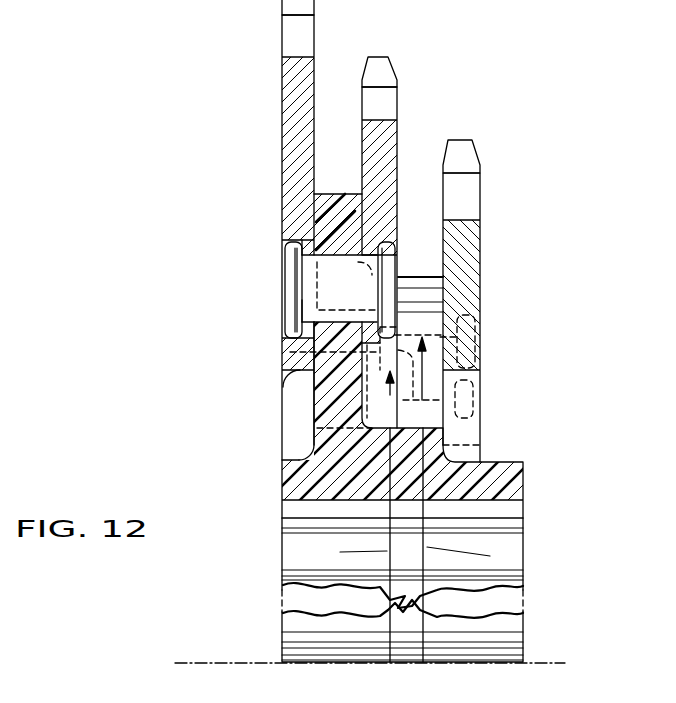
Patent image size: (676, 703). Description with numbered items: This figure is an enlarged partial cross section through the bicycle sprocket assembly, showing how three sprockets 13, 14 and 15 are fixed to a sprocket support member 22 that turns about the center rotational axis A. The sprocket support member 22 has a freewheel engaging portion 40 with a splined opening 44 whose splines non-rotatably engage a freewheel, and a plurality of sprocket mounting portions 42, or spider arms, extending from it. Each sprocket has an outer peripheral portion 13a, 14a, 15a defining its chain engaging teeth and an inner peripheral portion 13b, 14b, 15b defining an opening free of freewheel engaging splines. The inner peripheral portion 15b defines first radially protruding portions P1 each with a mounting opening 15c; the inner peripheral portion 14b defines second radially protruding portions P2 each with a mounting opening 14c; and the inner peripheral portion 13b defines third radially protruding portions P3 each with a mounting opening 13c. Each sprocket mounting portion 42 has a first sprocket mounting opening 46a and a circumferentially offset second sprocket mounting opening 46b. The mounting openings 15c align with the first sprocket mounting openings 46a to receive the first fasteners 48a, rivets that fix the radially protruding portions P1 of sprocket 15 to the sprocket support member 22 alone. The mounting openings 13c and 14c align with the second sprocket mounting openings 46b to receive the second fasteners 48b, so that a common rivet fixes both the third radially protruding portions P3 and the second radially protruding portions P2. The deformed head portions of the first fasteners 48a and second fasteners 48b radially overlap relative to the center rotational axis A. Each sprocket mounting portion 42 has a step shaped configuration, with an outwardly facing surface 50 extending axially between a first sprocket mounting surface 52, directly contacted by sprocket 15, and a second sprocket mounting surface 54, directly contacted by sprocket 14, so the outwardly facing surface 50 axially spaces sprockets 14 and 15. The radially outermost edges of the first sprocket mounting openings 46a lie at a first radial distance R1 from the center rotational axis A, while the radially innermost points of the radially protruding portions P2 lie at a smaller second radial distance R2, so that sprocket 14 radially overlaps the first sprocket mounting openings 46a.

The sprocket 13 is at (280, 5).
The outer peripheral portion 13a is at (280, 42).
The inner peripheral portion 13b is at (308, 308).
The mounting opening 13c is at (280, 247).
The sprocket 14 is at (381, 57).
The outer peripheral portion 14a is at (393, 72).
The inner peripheral portion 14b is at (470, 346).
The mounting opening 14c is at (375, 262).
The sprocket 15 is at (462, 140).
The outer peripheral portion 15a is at (481, 152).
The inner peripheral portion 15b is at (480, 446).
The mounting opening 15c is at (480, 402).
The sprocket support member 22 is at (311, 438).
The freewheel engaging portion 40 is at (523, 485).
The sprocket mounting portion 42 is at (338, 193).
The splined opening 44 is at (313, 503).
The first sprocket mounting opening 46a is at (282, 352).
The second sprocket mounting opening 46b is at (284, 258).
The first fastener 48a is at (480, 393).
The second fastener 48b is at (284, 272).
The outwardly facing surface 50 is at (422, 277).
The first sprocket mounting surface 52 is at (447, 298).
The second sprocket mounting surface 54 is at (398, 222).
The first radially protruding portion P1 is at (460, 370).
The second radially protruding portion P2 is at (313, 399).
The third radially protruding portion P3 is at (283, 387).
The first radial distance R1 is at (427, 547).
The second radial distance R2 is at (387, 551).
The center rotational axis A is at (206, 663).